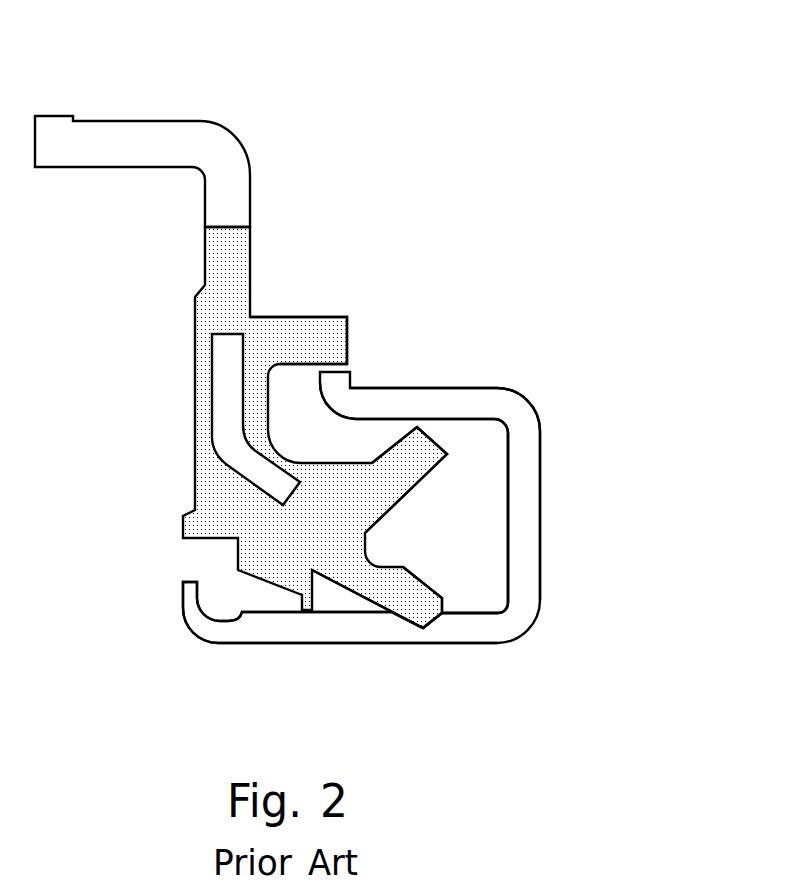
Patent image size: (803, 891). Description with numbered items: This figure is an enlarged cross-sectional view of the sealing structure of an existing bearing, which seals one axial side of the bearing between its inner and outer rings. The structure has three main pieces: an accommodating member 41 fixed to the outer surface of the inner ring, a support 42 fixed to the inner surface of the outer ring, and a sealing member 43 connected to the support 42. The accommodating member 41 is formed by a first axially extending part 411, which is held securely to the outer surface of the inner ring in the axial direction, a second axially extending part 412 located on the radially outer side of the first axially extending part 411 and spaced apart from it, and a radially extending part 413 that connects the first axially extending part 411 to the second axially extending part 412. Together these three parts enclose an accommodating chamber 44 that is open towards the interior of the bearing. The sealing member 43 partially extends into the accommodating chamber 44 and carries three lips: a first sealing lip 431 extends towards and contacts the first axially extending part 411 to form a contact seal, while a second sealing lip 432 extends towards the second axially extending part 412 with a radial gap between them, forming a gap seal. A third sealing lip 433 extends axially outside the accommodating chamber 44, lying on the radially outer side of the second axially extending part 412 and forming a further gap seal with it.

The accommodating member 41 is at (433, 521).
The first axially extending part 411 is at (283, 615).
The second axially extending part 412 is at (485, 403).
The radially extending part 413 is at (527, 535).
The support 42 is at (132, 140).
The sealing member 43 is at (278, 478).
The first sealing lip 431 is at (405, 617).
The second sealing lip 432 is at (408, 427).
The third sealing lip 433 is at (302, 328).
The accommodating chamber 44 is at (483, 600).